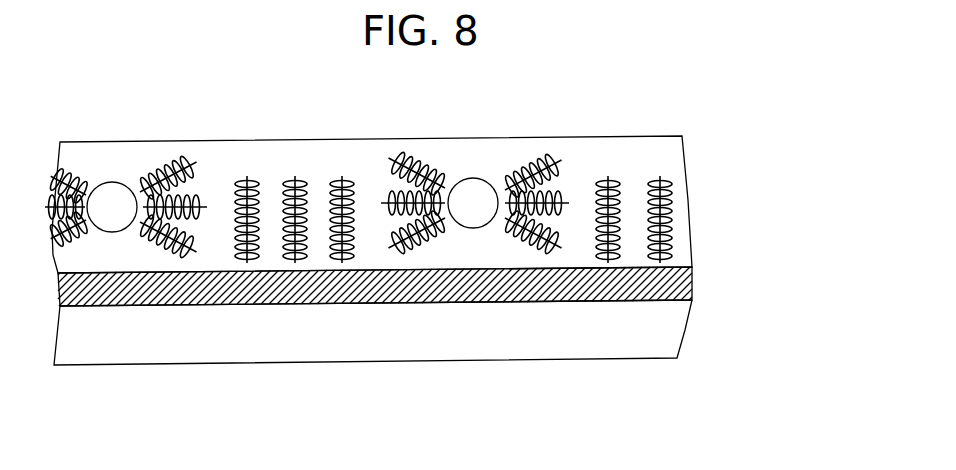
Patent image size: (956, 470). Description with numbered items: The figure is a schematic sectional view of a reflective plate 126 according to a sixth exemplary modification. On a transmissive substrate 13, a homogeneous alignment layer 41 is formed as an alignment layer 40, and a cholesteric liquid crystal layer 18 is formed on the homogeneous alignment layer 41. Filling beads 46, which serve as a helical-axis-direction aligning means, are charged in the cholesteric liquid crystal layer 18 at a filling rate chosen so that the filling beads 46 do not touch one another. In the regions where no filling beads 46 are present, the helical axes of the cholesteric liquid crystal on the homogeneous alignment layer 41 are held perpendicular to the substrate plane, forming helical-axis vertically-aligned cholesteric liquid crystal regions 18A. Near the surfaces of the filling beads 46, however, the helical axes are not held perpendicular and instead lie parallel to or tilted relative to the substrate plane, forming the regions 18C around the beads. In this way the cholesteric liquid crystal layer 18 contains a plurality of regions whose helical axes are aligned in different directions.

The reflective plate 126 is at (690, 88).
The cholesteric liquid crystal layer 18 is at (652, 157).
The helical-axis vertically-aligned cholesteric liquid crystal regions 18A is at (377, 131).
The radial fiber portions 18C is at (222, 131).
The filling beads 46 is at (110, 225).
The alignment layer 40 is at (705, 282).
The homogeneous alignment layer 41 is at (630, 300).
The transmissive substrate 13 is at (665, 337).